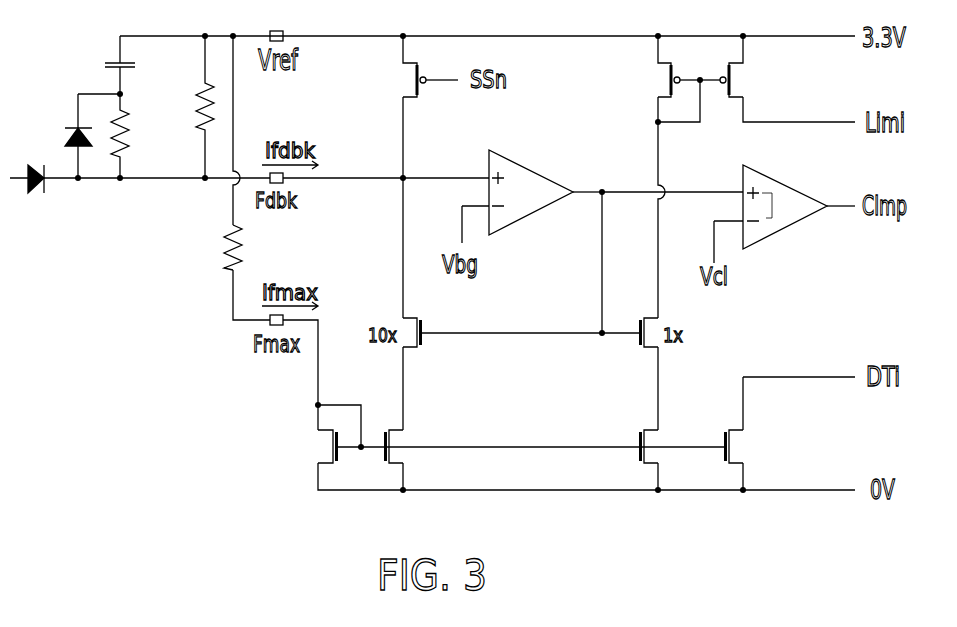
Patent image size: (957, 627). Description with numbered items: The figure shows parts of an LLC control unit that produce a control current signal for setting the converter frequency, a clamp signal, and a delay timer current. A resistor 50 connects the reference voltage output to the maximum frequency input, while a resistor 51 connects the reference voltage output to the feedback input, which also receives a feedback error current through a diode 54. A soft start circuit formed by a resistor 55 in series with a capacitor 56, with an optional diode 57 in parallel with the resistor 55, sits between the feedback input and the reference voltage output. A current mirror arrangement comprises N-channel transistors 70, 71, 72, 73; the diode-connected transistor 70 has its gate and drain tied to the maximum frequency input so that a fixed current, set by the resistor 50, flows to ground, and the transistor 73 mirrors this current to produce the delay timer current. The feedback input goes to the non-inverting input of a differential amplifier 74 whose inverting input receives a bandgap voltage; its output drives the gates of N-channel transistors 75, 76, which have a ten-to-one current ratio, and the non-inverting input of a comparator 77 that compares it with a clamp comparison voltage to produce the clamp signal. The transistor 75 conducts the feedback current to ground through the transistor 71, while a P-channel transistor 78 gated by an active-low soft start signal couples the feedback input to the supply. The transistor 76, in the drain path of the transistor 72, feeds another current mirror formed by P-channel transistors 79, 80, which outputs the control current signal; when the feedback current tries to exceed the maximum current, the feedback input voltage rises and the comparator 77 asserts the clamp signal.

The resistor 50 is at (228, 250).
The resistor 51 is at (198, 100).
The diode 54 is at (44, 183).
The resistor 55 is at (132, 134).
The capacitor 56 is at (100, 69).
The diode 57 is at (65, 135).
The N-channel transistor 70 is at (315, 440).
The N-channel transistor 71 is at (410, 438).
The N-channel transistor 72 is at (637, 438).
The N-channel transistor 73 is at (745, 442).
The differential amplifier 74 is at (532, 210).
The N-channel transistor 75 is at (424, 344).
The N-channel transistor 76 is at (637, 346).
The comparator 77 is at (777, 228).
The P-channel transistor 78 is at (400, 75).
The P-channel transistor 79 is at (657, 73).
The P-channel transistor 80 is at (740, 80).